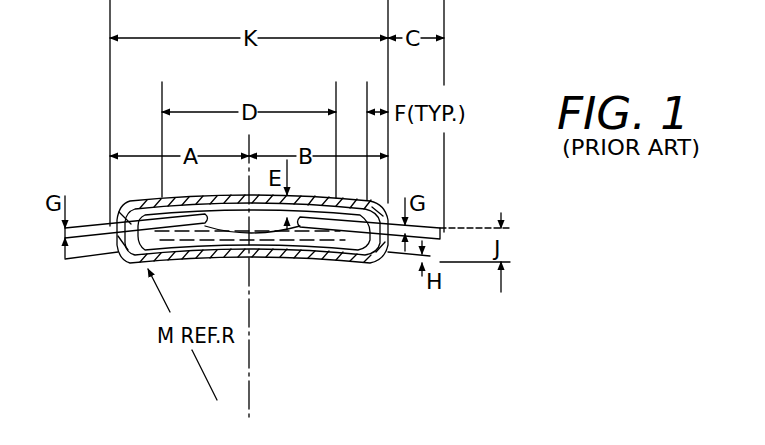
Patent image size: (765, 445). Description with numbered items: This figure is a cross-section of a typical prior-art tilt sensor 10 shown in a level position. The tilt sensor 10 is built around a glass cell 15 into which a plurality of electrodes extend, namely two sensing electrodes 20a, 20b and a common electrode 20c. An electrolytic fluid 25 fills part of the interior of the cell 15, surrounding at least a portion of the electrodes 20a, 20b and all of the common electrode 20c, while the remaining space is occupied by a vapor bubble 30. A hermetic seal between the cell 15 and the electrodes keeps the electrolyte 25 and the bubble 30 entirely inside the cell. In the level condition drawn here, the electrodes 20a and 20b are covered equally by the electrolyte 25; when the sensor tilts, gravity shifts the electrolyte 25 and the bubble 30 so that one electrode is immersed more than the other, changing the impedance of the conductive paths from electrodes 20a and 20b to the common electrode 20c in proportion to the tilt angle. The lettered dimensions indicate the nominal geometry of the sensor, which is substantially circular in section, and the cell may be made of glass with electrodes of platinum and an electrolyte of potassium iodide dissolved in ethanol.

The tilt sensor 10 is at (516, 40).
The glass cell 15 is at (137, 267).
The electrode 20a is at (440, 225).
The electrode 20b is at (96, 220).
The common electrode 20c is at (95, 262).
The electrolytic fluid 25 is at (268, 252).
The vapor bubble 30 is at (208, 249).